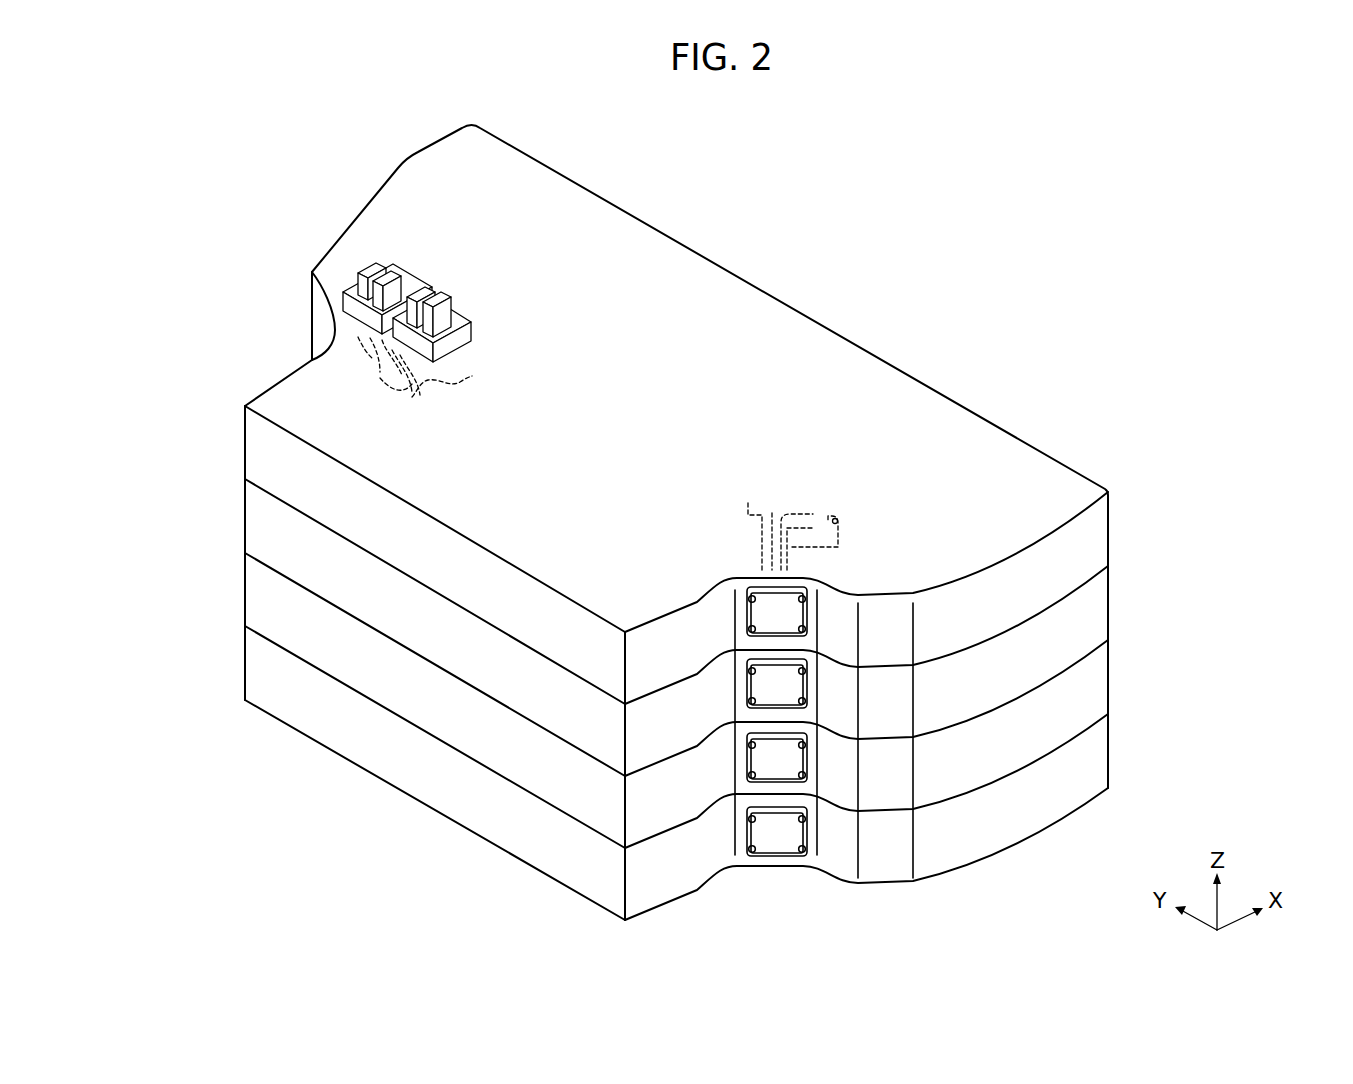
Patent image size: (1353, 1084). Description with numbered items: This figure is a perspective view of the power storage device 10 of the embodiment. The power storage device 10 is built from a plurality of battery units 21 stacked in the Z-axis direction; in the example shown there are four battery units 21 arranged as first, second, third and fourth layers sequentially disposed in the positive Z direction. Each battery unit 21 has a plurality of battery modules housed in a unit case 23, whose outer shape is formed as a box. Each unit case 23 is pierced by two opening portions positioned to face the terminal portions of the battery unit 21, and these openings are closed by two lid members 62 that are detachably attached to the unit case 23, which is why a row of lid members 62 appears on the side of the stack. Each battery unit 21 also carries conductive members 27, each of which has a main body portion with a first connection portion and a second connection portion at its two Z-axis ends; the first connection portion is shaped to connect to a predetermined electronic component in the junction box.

The power storage device 10 is at (1027, 277).
The battery unit 21 is at (1087, 544).
The unit case 23 is at (418, 548).
The conductive member 27 is at (383, 377).
The lid member 62 is at (762, 612).